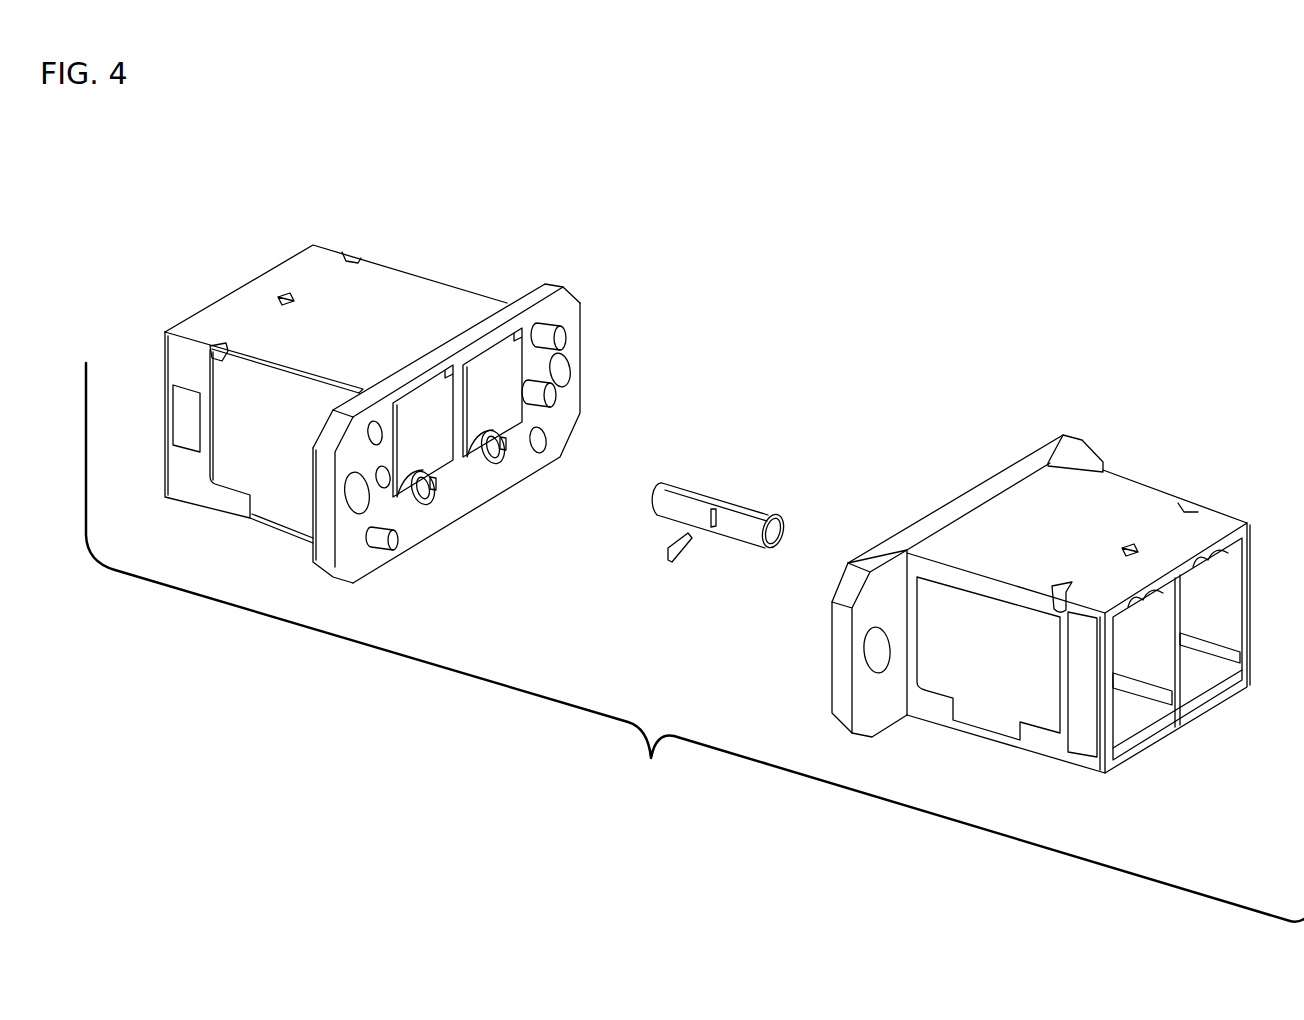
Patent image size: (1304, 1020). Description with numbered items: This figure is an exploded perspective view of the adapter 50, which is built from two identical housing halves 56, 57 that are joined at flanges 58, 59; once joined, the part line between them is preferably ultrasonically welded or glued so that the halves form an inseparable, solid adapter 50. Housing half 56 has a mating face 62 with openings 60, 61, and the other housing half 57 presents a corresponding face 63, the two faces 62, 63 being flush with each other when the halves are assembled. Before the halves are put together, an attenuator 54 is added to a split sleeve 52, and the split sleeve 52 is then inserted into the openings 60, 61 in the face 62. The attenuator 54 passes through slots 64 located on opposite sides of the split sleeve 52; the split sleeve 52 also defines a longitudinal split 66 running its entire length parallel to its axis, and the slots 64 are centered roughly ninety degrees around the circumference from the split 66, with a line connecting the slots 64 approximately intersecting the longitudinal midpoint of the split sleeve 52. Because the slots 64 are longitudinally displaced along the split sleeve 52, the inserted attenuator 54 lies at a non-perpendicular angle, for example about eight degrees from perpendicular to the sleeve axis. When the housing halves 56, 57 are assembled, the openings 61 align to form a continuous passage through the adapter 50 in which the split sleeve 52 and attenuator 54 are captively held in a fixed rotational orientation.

The adapter 50 is at (695, 642).
The split sleeve 52 is at (725, 505).
The attenuator 54 is at (680, 555).
The housing half 56 is at (418, 298).
The housing half 57 is at (1132, 497).
The flange 58 is at (322, 543).
The flange 59 is at (573, 297).
The opening 60 is at (418, 497).
The opening 61 is at (497, 462).
The face 62 is at (485, 495).
The face 63 is at (957, 494).
The slot 64 is at (717, 522).
The split 66 is at (678, 490).